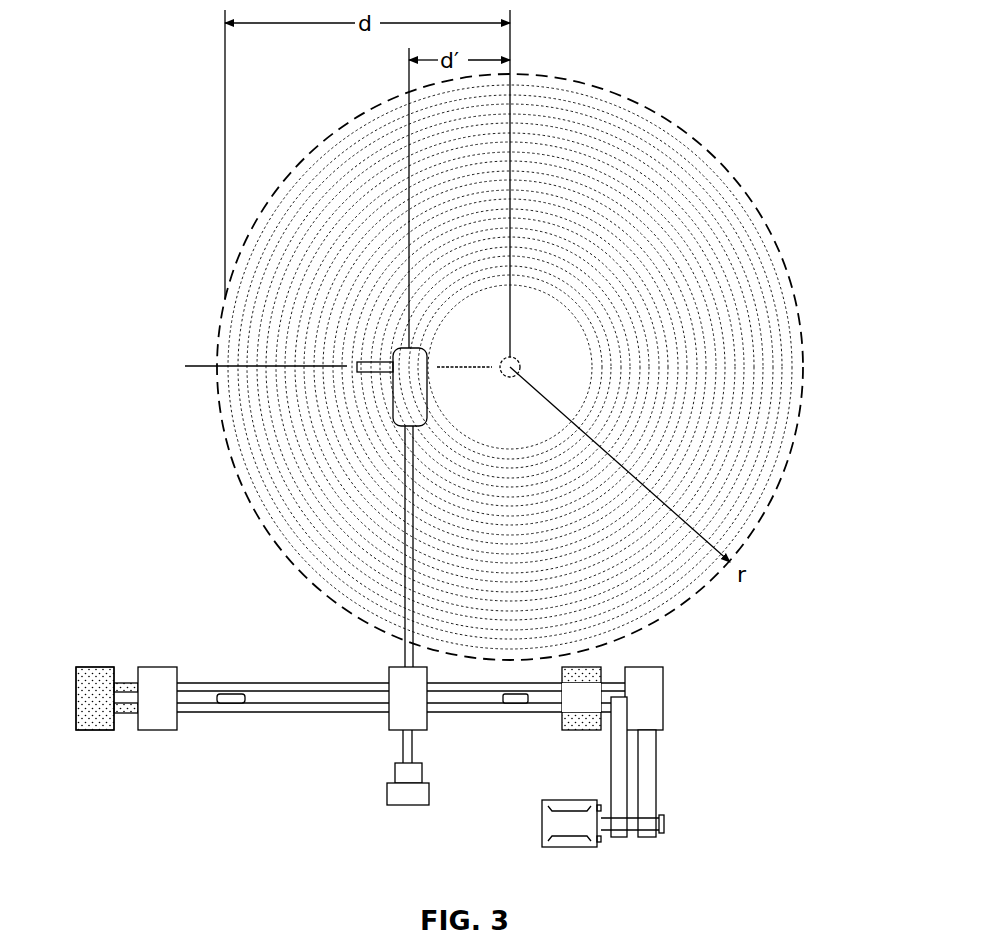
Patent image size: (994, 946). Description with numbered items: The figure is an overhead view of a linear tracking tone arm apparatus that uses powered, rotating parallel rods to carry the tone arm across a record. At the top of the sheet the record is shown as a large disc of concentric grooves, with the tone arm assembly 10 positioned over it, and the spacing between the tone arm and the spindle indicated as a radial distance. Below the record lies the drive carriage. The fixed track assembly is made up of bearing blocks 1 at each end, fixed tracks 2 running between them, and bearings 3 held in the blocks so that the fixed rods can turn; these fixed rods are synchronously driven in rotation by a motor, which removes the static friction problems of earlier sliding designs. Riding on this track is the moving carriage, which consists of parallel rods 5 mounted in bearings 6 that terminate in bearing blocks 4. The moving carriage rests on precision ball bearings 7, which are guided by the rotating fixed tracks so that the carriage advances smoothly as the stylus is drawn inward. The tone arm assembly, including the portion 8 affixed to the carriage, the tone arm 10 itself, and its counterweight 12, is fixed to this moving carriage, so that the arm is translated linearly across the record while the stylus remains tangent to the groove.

The bearing blocks 1 is at (97, 667).
The fixed tracks 2 is at (127, 683).
The bearings 3 is at (76, 707).
The bearing blocks 4 is at (150, 667).
The parallel rods 5 is at (287, 710).
The bearings 6 is at (428, 690).
The precision ball bearings 7 is at (232, 697).
The tone arm assembly 8 is at (390, 722).
The tone arm assembly 10 is at (403, 378).
The counterweight 12 is at (395, 792).